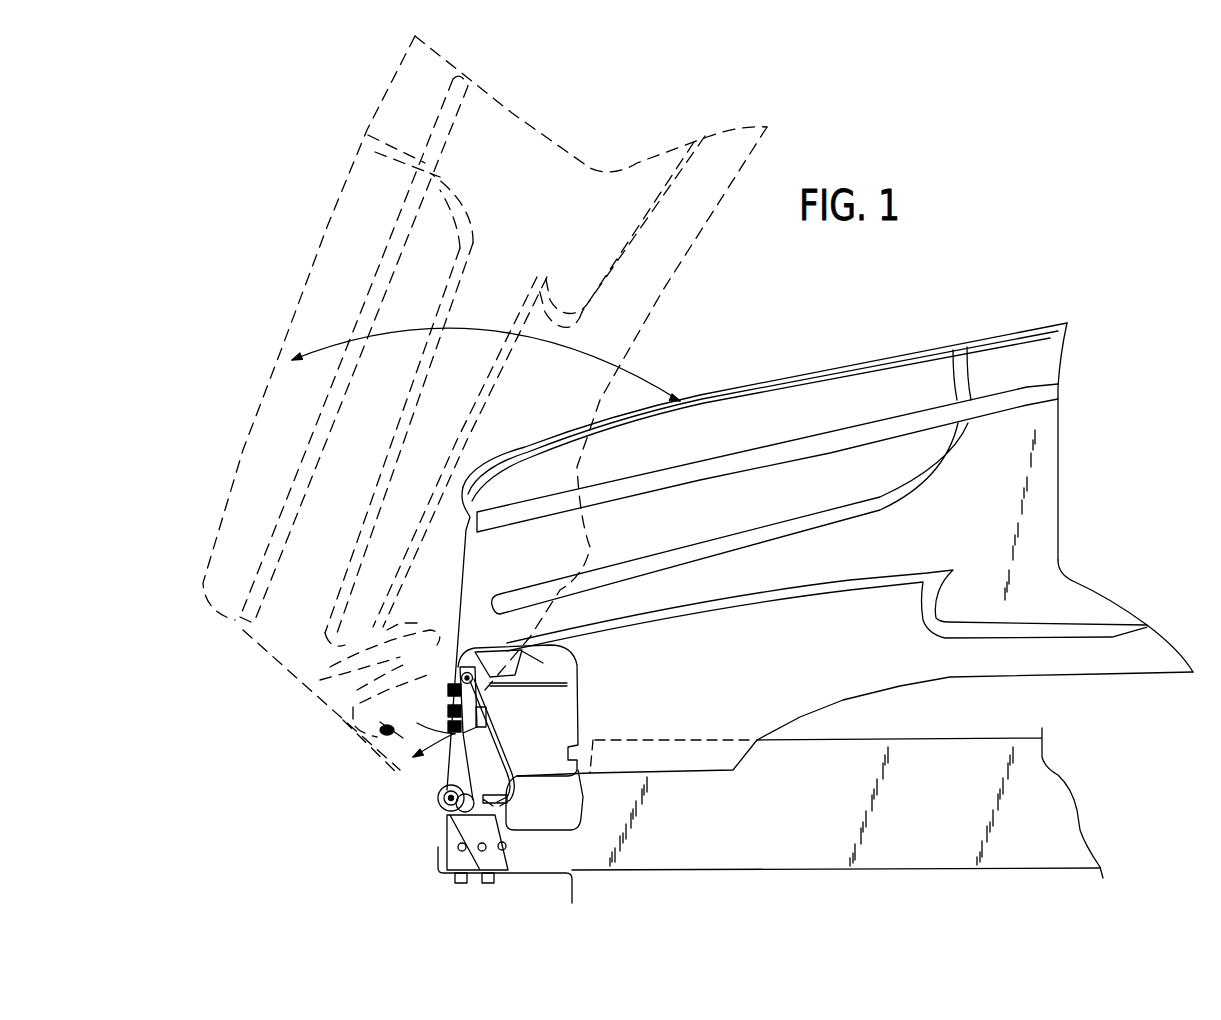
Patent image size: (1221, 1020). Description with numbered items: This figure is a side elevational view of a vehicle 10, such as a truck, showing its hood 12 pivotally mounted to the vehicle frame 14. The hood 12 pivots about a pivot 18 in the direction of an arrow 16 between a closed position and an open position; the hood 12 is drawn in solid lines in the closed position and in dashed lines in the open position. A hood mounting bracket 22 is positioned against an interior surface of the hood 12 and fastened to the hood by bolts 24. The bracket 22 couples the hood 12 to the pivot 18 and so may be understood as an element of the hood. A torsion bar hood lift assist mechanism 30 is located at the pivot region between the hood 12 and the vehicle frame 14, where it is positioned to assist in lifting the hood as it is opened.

The vehicle 10 is at (934, 284).
The hood 12 is at (312, 224).
The vehicle frame 14 is at (652, 862).
The arrow 16 is at (640, 385).
The pivot 18 is at (438, 802).
The hood mounting bracket 22 is at (448, 692).
The bolts 24 is at (448, 709).
The torsion bar hood lift assist mechanism 30 is at (506, 718).